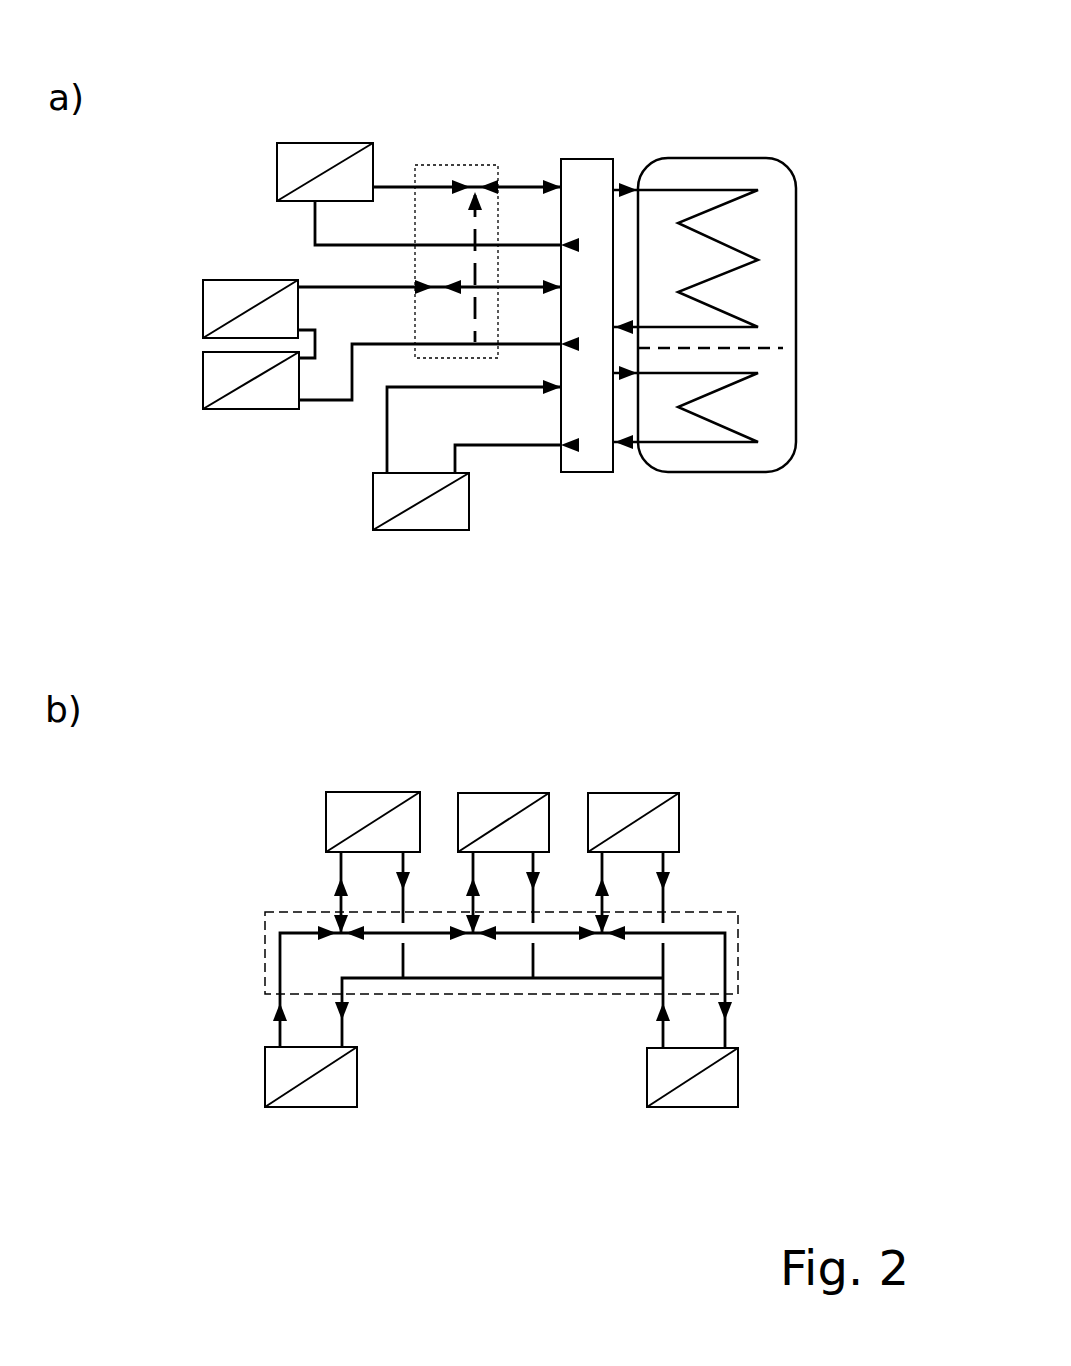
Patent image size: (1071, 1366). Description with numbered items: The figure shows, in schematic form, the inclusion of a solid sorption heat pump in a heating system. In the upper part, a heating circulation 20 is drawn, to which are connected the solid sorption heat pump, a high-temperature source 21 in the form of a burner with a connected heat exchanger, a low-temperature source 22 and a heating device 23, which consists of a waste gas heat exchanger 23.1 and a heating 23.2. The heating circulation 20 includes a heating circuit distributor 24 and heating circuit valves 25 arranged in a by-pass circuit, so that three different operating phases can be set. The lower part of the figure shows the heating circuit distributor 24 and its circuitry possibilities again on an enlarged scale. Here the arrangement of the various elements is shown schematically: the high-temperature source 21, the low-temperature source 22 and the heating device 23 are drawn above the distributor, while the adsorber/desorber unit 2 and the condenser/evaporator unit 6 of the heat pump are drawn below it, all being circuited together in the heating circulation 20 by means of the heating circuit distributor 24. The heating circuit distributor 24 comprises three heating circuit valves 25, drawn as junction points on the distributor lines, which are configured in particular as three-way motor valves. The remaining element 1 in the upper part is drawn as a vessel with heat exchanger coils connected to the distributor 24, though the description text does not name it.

The heat exchanger / storage tank 1 is at (753, 232).
The adsorber/desorber unit 2 is at (718, 1092).
The condenser/evaporator unit 6 is at (280, 1062).
The heating circulation 20 is at (530, 478).
The high-temperature source 21 is at (307, 159).
The low-temperature source 22 is at (403, 495).
The heating device 23 is at (497, 808).
The waste gas heat exchanger 23.1 is at (250, 293).
The heating 23.2 is at (228, 373).
The heating circuit distributor 24 is at (587, 229).
The heating circuit valves 25 is at (440, 280).